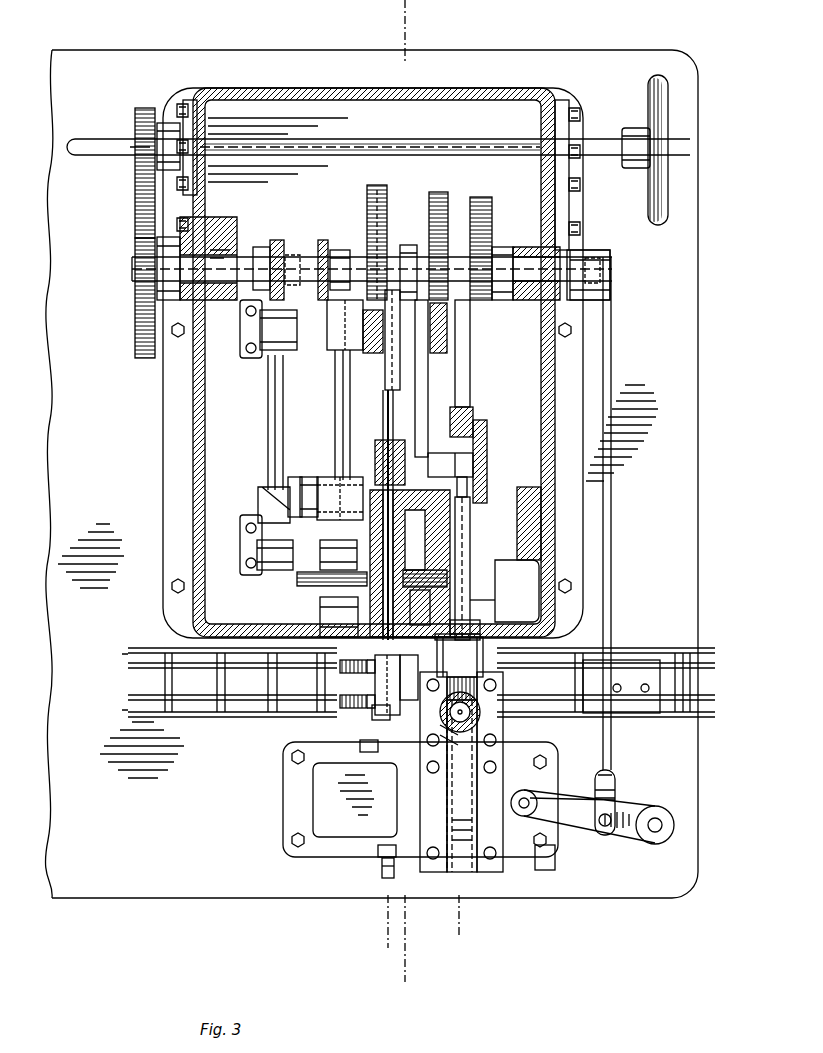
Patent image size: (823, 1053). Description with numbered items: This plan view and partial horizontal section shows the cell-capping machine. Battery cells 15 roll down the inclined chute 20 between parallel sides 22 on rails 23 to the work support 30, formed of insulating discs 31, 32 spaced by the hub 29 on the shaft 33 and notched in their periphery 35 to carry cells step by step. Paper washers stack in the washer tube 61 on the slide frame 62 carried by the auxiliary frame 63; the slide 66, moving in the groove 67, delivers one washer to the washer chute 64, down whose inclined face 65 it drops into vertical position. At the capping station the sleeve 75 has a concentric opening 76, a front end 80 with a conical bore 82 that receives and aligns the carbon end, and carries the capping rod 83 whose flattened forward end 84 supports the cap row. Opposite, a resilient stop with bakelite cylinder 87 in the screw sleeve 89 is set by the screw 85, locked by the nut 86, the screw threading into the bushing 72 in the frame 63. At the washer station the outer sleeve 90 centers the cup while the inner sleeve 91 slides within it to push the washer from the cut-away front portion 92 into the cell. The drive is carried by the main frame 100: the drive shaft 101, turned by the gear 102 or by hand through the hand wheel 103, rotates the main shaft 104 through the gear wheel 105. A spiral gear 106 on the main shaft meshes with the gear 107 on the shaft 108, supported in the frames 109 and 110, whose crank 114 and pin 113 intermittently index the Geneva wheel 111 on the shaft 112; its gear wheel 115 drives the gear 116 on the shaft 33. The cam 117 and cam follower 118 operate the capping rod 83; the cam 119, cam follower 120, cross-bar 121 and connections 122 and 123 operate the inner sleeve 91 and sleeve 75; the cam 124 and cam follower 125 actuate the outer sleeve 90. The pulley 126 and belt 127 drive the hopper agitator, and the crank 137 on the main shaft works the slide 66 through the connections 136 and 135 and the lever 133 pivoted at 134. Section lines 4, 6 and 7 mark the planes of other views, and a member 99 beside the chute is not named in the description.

The section line 4 is at (405, 10).
The section line 6 is at (459, 920).
The section line 7 is at (388, 934).
The battery cell 15 is at (380, 720).
The inclined chute 20 is at (240, 717).
The parallel sides 22 is at (140, 647).
The rails 23 is at (128, 700).
The hub 29 is at (440, 705).
The work support 30 is at (413, 672).
The insulating disc 31 is at (350, 708).
The insulating disc 32 is at (354, 674).
The shaft 33 is at (419, 606).
The periphery 35 is at (338, 700).
The washer tube 61 is at (458, 732).
The slide frame 62 is at (486, 863).
The auxiliary frame 63 is at (545, 860).
The washer chute 64 is at (466, 650).
The inclined face 65 is at (478, 688).
The slide 66 is at (462, 820).
The groove 67 is at (445, 790).
The bushing 72 is at (376, 760).
The sleeve 75 is at (398, 498).
The opening 76 is at (320, 610).
The front end 80 is at (370, 640).
The conical bore 82 is at (380, 690).
The capping rod 83 is at (404, 522).
The flattened end 84 is at (418, 578).
The adjusting screw 85 is at (394, 870).
The nut 86 is at (380, 856).
The cylinder 87 is at (447, 718).
The screw sleeve 89 is at (359, 744).
The outer sleeve 90 is at (492, 508).
The inner sleeve 91 is at (490, 608).
The front portion 92 is at (480, 622).
The rail plate 99 is at (644, 655).
The main frame 100 is at (204, 478).
The drive shaft 101 is at (472, 145).
The gear 102 is at (145, 104).
The hand wheel 103 is at (655, 222).
The main shaft 104 is at (240, 256).
The gear wheel 105 is at (140, 358).
The spiral gear 106 is at (278, 240).
The spiral gear 107 is at (292, 254).
The shaft 108 is at (268, 412).
The frame 109 is at (262, 359).
The frame 110 is at (247, 512).
The Geneva wheel 111 is at (304, 476).
The shaft 112 is at (336, 413).
The pin 113 is at (294, 476).
The crank 114 is at (265, 486).
The gear wheel 115 is at (296, 588).
The gear 116 is at (470, 560).
The cam 117 is at (377, 190).
The cam follower 118 is at (385, 376).
The cam 119 is at (438, 195).
The cam follower 120 is at (426, 381).
The cross-bar 121 is at (441, 452).
The connection 122 is at (458, 488).
The connection 123 is at (372, 443).
The cam 124 is at (482, 200).
The cam follower 125 is at (470, 370).
The pulley 126 is at (334, 249).
The belt 127 is at (322, 240).
The lever 133 is at (583, 836).
The pivot 134 is at (657, 806).
The connection 135 is at (617, 792).
The connection 136 is at (612, 745).
The crank 137 is at (602, 252).